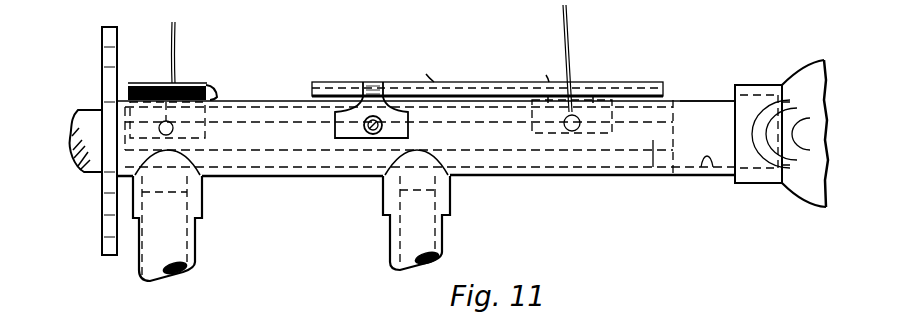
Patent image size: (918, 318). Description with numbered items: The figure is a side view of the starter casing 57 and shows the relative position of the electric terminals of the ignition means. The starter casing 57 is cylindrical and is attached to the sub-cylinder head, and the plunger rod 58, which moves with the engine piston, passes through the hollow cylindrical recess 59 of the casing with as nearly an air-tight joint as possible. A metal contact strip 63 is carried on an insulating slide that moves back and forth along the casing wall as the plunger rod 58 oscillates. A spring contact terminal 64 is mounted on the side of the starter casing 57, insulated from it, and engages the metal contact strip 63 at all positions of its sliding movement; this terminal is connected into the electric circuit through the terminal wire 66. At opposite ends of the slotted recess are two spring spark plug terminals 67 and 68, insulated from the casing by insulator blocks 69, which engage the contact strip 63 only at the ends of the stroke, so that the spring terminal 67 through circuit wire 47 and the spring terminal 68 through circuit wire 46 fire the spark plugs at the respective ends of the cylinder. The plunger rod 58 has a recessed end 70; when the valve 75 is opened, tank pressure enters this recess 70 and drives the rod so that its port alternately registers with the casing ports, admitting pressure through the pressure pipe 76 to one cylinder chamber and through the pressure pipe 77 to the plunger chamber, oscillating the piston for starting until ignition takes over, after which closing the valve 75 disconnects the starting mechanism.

The circuit wire 46 is at (176, 53).
The circuit wire 47 is at (565, 6).
The starter casing 57 is at (690, 101).
The plunger rod 58 is at (673, 106).
The hollow cylindrical recess 59 is at (708, 175).
The metal contact strip 63 is at (478, 81).
The spring contact terminal 64 is at (335, 140).
The terminal wire 66 is at (368, 135).
The spring spark plug terminal 67 is at (612, 100).
The spring spark plug terminal 68 is at (183, 84).
The insulator block 69 is at (208, 98).
The recessed end 70 is at (653, 167).
The valve 75 is at (763, 183).
The pressure pipe 76 is at (188, 243).
The pressure pipe 77 is at (437, 228).